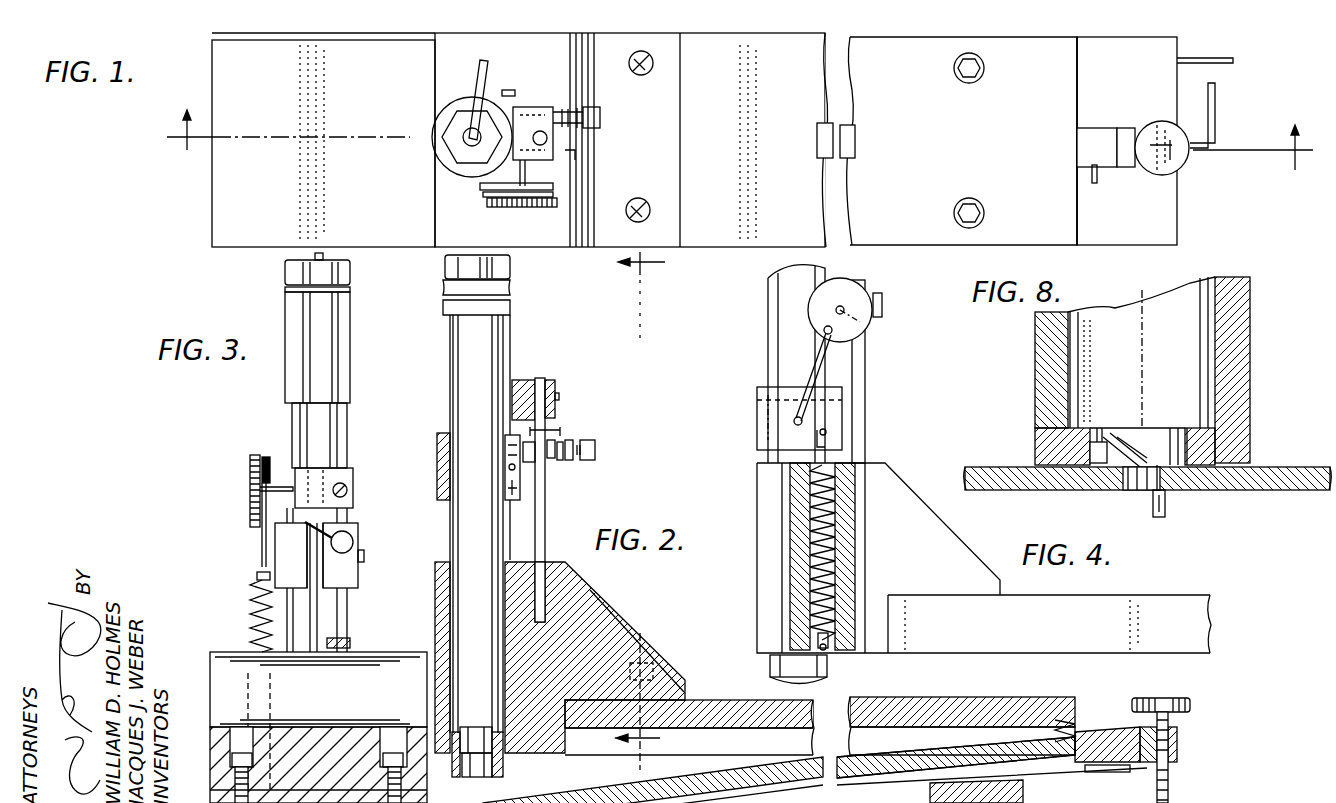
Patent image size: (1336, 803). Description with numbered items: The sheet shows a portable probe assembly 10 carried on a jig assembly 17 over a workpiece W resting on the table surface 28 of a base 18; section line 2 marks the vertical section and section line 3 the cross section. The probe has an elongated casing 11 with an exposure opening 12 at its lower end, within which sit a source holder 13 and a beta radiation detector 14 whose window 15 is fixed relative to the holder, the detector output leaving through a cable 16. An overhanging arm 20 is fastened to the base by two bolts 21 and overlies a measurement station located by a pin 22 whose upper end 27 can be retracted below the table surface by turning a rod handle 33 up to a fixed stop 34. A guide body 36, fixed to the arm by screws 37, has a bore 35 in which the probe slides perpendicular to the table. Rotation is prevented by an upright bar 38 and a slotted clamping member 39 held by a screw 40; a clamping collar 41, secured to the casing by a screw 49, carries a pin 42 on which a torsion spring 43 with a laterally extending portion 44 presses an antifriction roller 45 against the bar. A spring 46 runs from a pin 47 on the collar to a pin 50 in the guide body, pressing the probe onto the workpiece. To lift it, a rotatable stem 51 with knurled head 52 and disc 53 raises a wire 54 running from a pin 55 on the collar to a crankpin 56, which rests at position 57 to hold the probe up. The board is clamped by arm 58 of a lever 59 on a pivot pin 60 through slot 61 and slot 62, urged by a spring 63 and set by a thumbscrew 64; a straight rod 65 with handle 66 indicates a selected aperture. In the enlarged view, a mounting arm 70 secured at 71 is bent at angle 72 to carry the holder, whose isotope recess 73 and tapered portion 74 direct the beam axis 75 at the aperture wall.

In FIG. 1, the section line 2– 2 is at (737, 133).
In FIG. 1, the section line 3– 3 is at (648, 297).
In FIG. 2, the section line 3– 3 is at (646, 701).
In FIG. 3, the portable probe assembly 10 is at (238, 415).
In FIG. 2, the portable probe assembly 10 is at (437, 410).
In FIG. 3, the casing 11 is at (330, 647).
In FIG. 2, the casing 11 is at (452, 530).
In FIG. 4, the casing 11 is at (762, 455).
In FIG. 8, the casing 11 is at (1252, 303).
In FIG. 2, the exposure opening 12 is at (462, 770).
In FIG. 2, the source holder 13 is at (452, 760).
In FIG. 2, the beta radiation detector 14 is at (470, 727).
In FIG. 8, the beta radiation detector 14 is at (1180, 343).
In FIG. 2, the window 15 is at (503, 765).
In FIG. 8, the window 15 is at (1157, 442).
In FIG. 1, the cable 16 is at (483, 85).
In FIG. 3, the cable 16 is at (290, 262).
In FIG. 2, the jig assembly 17 is at (640, 603).
In FIG. 1, the base 18 is at (1152, 238).
In FIG. 2, the base 18 is at (1197, 790).
In FIG. 1, the overhanging arm 20 is at (798, 152).
In FIG. 2, the overhanging arm 20 is at (945, 700).
In FIG. 4, the overhanging arm 20 is at (1080, 607).
In FIG. 1, the bolts 21 is at (969, 198).
In FIG. 8, the pin 22 is at (1167, 505).
In FIG. 8, the upper end of pin 27 is at (1150, 478).
In FIG. 1, the table surface 28 is at (228, 190).
In FIG. 2, the table surface 28 is at (976, 770).
In FIG. 1, the handle 33 is at (1216, 122).
In FIG. 1, the fixed stop 34 is at (1232, 62).
In FIG. 2, the bore 35 is at (437, 625).
In FIG. 1, the guide body 36 is at (667, 172).
In FIG. 3, the guide body 36 is at (212, 652).
In FIG. 2, the guide body 36 is at (558, 664).
In FIG. 4, the guide body 36 is at (992, 580).
In FIG. 1, the screws 37 is at (640, 195).
In FIG. 3, the screws 37 is at (387, 748).
In FIG. 2, the screws 37 is at (655, 665).
In FIG. 1, the upright bar 38 is at (543, 107).
In FIG. 3, the upright bar 38 is at (332, 645).
In FIG. 2, the upright bar 38 is at (545, 545).
In FIG. 4, the upright bar 38 is at (860, 390).
In FIG. 1, the slotted clamping member 39 is at (525, 102).
In FIG. 3, the slotted clamping member 39 is at (350, 463).
In FIG. 2, the slotted clamping member 39 is at (525, 383).
In FIG. 1, the screw 40 is at (568, 58).
In FIG. 3, the screw 40 is at (350, 495).
In FIG. 2, the screw 40 is at (556, 397).
In FIG. 1, the clamping collar 41 is at (452, 100).
In FIG. 3, the clamping collar 41 is at (347, 580).
In FIG. 2, the clamping collar 41 is at (437, 440).
In FIG. 4, the clamping collar 41 is at (758, 440).
In FIG. 1, the pin 42 is at (602, 117).
In FIG. 3, the pin 42 is at (337, 525).
In FIG. 2, the pin 42 is at (598, 450).
In FIG. 1, the torsion spring 43 is at (573, 115).
In FIG. 2, the torsion spring 43 is at (560, 463).
In FIG. 1, the laterally extending portion 44 is at (580, 163).
In FIG. 2, the laterally extending portion 44 is at (557, 432).
In FIG. 2, the antifriction roller 45 is at (527, 463).
In FIG. 3, the spring 46 is at (250, 621).
In FIG. 4, the spring 46 is at (860, 500).
In FIG. 3, the pin 47 is at (257, 576).
In FIG. 4, the pin 47 is at (827, 432).
In FIG. 1, the screw 49 is at (505, 100).
In FIG. 3, the screw 49 is at (353, 540).
In FIG. 2, the screw 49 is at (512, 473).
In FIG. 4, the pin 50 is at (827, 645).
In FIG. 1, the rotatable stem 51 is at (527, 170).
In FIG. 3, the rotatable stem 51 is at (280, 483).
In FIG. 4, the rotatable stem 51 is at (827, 318).
In FIG. 1, the knurled head 52 is at (545, 205).
In FIG. 3, the knurled head 52 is at (250, 470).
In FIG. 4, the knurled head 52 is at (835, 312).
In FIG. 1, the disc 53 is at (560, 205).
In FIG. 3, the disc 53 is at (268, 458).
In FIG. 4, the disc 53 is at (820, 293).
In FIG. 1, the wire 54 is at (482, 188).
In FIG. 3, the wire 54 is at (250, 533).
In FIG. 4, the wire 54 is at (833, 277).
In FIG. 3, the pin 55 is at (265, 555).
In FIG. 4, the pin 55 is at (800, 365).
In FIG. 4, the crankpin 56 is at (868, 332).
In FIG. 4, the rest position 57 is at (887, 312).
In FIG. 1, the arm 58 is at (850, 140).
In FIG. 1, the lever 59 is at (1102, 140).
In FIG. 2, the lever 59 is at (1107, 733).
In FIG. 2, the pivot pin 60 is at (953, 758).
In FIG. 2, the slot 61 is at (1025, 786).
In FIG. 2, the slot 62 is at (790, 751).
In FIG. 2, the spring 63 is at (1070, 725).
In FIG. 1, the adjustable thumbscrew 64 is at (1153, 115).
In FIG. 2, the adjustable thumbscrew 64 is at (1192, 706).
In FIG. 2, the straight rod 65 is at (517, 793).
In FIG. 1, the handle 66 is at (1097, 178).
In FIG. 2, the handle 66 is at (1102, 772).
In FIG. 8, the source holder mounting arm 70 is at (1090, 456).
In FIG. 8, the securing point 71 is at (1090, 445).
In FIG. 8, the angle 72 is at (1107, 473).
In FIG. 8, the isotope containing recess 73 is at (1135, 440).
In FIG. 8, the tapered end portion 74 is at (1145, 448).
In FIG. 8, the beta radiation axis 75 is at (1060, 388).
In FIG. 8, the workpiece W is at (1010, 470).